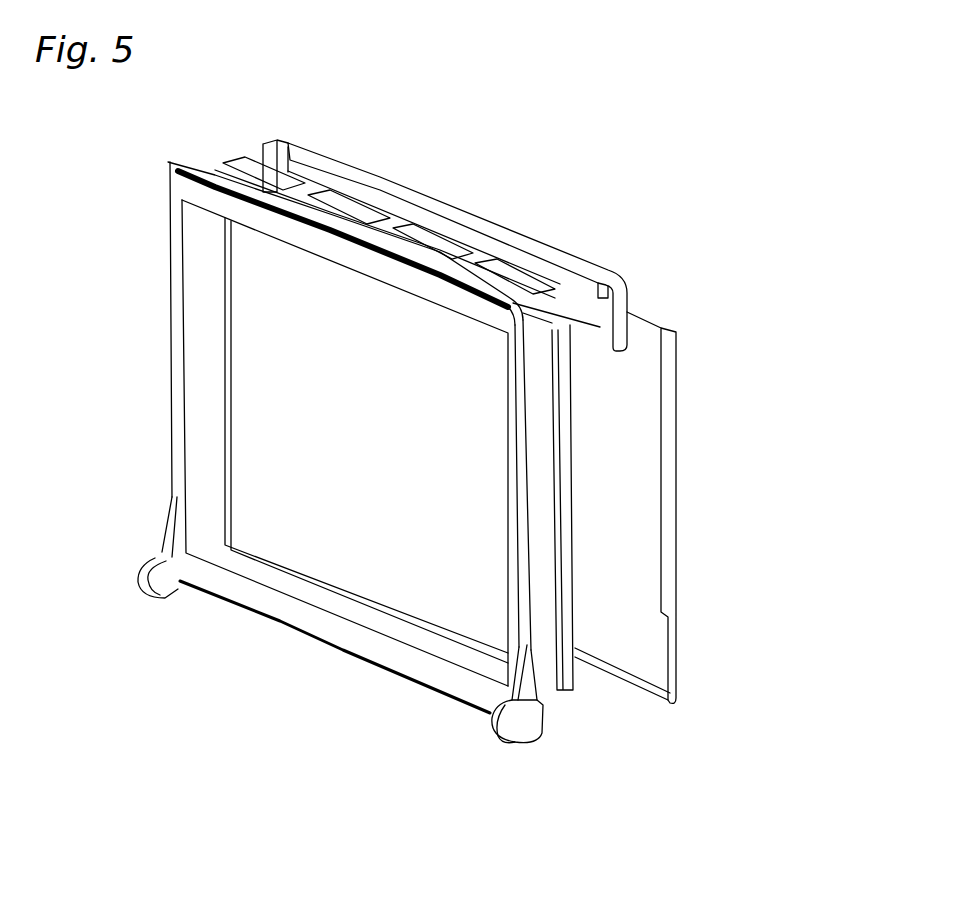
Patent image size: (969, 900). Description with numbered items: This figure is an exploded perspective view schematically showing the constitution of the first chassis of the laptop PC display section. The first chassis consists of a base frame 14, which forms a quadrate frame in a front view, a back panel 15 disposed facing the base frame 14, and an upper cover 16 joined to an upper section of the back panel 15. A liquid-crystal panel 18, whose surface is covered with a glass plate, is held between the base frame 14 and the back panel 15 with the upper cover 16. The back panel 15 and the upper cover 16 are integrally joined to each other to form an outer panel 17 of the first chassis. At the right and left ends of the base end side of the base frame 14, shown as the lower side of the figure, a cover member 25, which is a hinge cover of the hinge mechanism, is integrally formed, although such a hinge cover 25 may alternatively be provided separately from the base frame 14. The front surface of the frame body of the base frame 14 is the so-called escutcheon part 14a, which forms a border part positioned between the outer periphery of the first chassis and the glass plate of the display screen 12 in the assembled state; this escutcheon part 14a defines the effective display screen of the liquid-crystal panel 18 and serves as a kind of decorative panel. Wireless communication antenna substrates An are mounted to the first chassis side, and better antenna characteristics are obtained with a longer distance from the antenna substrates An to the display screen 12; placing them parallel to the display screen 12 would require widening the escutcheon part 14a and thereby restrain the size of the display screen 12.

The display screen 12 is at (336, 534).
The base frame 14 is at (172, 327).
The escutcheon part 14a is at (178, 396).
The back panel 15 is at (667, 507).
The upper cover 16 is at (601, 272).
The outer panel 17 is at (540, 421).
The liquid-crystal panel 18 is at (572, 604).
The cover member 25 is at (137, 570).
The antenna substrates An is at (510, 277).